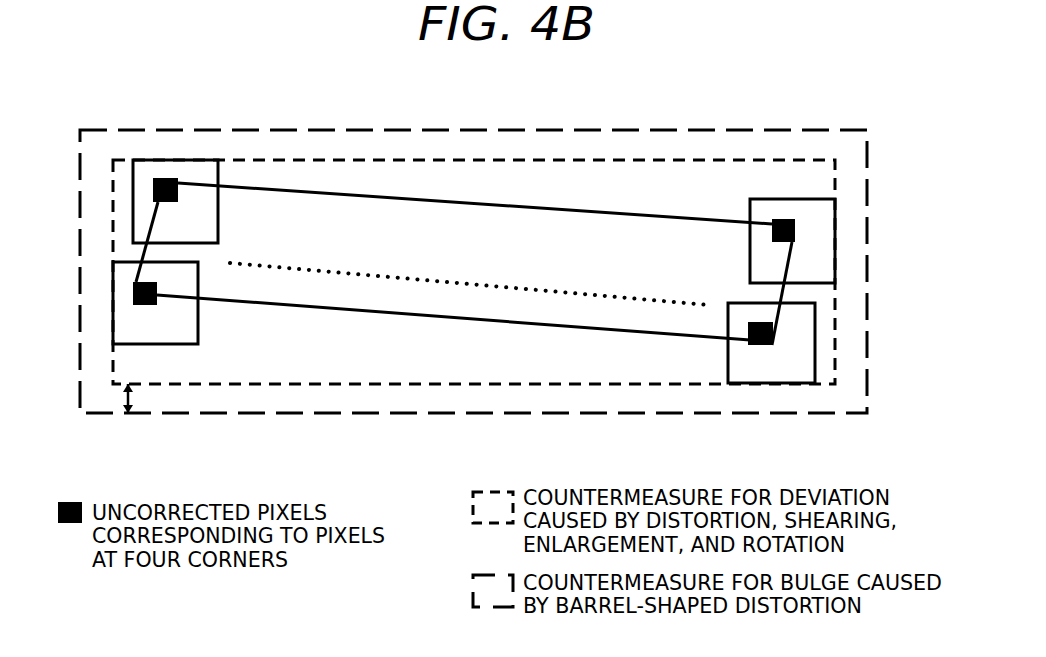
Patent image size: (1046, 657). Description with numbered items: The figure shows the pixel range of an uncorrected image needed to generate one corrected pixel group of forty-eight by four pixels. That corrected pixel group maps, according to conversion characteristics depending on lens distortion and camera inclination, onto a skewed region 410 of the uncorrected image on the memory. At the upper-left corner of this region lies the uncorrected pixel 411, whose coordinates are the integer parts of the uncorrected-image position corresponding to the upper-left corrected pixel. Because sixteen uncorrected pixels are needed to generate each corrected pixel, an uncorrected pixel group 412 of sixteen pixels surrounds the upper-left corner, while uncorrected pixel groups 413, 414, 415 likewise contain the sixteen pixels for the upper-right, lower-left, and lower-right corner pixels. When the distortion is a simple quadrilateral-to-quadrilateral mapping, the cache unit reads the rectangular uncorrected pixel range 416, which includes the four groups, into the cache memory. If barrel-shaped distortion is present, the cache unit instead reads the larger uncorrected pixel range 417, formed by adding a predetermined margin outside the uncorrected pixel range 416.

The region 410 is at (390, 200).
The uncorrected pixel 411 is at (166, 180).
The uncorrected pixel group 412 is at (221, 182).
The uncorrected pixel group 413 is at (790, 199).
The uncorrected pixel group 414 is at (198, 316).
The uncorrected pixel group 415 is at (815, 338).
The uncorrected pixel range 416 is at (552, 160).
The uncorrected pixel range 417 is at (665, 128).